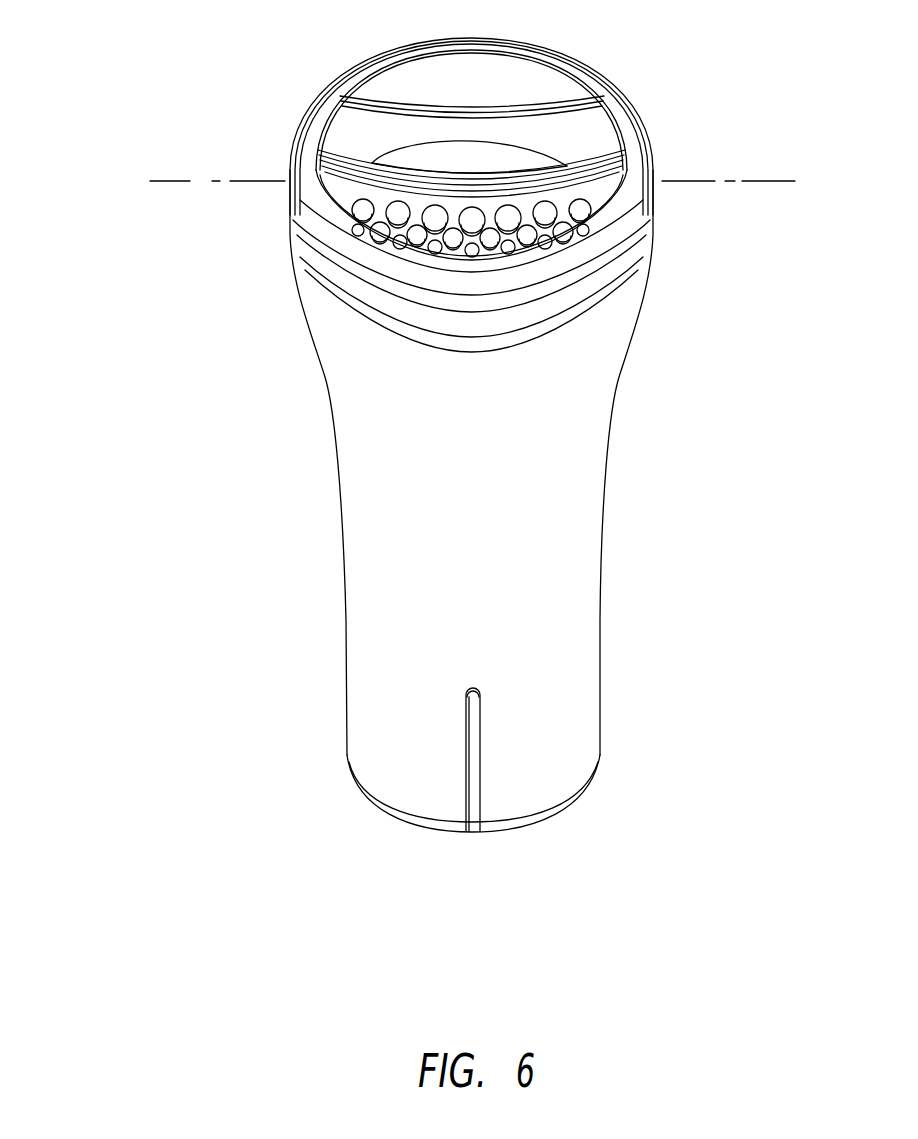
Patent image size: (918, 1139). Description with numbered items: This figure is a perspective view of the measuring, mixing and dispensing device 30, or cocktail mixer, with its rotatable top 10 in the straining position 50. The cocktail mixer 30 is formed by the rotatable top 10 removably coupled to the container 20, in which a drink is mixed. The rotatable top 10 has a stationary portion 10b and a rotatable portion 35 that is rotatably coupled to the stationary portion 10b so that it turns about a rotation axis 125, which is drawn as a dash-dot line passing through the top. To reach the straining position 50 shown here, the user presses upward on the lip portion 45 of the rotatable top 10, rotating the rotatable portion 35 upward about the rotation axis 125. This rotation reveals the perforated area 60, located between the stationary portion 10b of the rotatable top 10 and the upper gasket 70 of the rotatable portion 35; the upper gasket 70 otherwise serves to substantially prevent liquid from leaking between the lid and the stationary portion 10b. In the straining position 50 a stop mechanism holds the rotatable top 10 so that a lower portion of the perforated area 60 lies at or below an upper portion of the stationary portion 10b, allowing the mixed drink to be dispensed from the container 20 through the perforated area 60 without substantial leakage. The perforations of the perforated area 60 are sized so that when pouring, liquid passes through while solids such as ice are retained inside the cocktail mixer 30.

The measuring, mixing and dispensing device 30 is at (176, 95).
The container 20 is at (612, 455).
The rotatable top 10 is at (293, 228).
The stationary portion 10b is at (648, 235).
The rotatable portion 35 is at (592, 128).
The lip portion 45 is at (472, 158).
The upper gasket 70 is at (620, 153).
The straining position 50 is at (627, 192).
The perforated area 60 is at (308, 281).
The rotation axis 125 is at (190, 181).